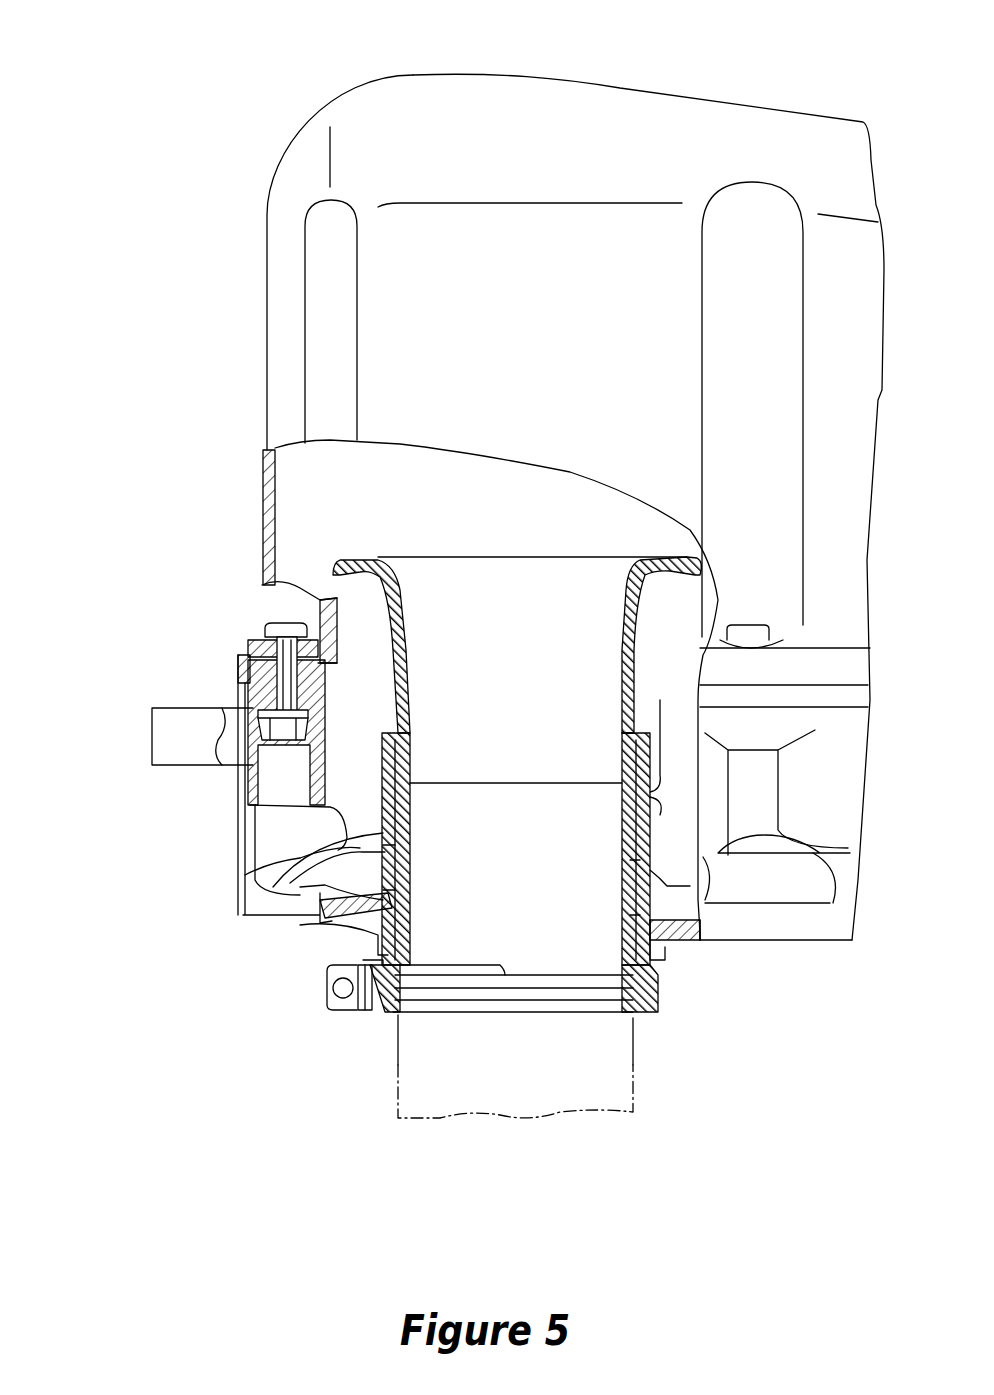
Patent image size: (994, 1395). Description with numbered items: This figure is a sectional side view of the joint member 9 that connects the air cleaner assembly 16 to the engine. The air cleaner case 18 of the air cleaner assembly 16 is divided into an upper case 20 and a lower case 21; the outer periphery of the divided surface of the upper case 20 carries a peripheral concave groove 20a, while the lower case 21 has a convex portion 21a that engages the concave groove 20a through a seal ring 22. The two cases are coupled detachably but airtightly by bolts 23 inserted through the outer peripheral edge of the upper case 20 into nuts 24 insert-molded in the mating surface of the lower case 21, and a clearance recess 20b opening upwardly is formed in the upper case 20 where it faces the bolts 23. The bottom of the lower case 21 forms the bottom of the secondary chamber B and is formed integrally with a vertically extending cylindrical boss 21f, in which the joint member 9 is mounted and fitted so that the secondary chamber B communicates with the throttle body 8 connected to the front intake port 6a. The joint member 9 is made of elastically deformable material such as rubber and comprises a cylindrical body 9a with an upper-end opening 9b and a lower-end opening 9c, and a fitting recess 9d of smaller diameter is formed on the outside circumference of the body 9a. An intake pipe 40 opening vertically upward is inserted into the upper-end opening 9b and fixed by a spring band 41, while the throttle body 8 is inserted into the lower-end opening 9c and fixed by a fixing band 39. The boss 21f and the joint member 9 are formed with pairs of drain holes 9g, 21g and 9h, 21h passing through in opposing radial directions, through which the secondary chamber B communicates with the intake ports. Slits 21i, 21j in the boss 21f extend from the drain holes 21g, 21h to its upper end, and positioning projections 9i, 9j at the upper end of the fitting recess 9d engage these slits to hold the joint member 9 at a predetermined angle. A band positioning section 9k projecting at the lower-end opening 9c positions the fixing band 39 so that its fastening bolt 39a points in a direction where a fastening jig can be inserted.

The air cleaner assembly 16 is at (268, 98).
The air cleaner case 18 is at (768, 100).
The upper case 20 is at (260, 283).
The concave groove 20a is at (242, 713).
The clearance recess 20b is at (350, 255).
The secondary chamber B is at (305, 478).
The lower case 21 is at (236, 886).
The convex portion 21a is at (240, 672).
The cylindrical boss 21f is at (300, 870).
The drain hole 21g is at (350, 890).
The drain hole 21h is at (677, 935).
The slit 21i is at (340, 860).
The slit 21j is at (640, 880).
The seal ring 22 is at (252, 648).
The bolt 23 is at (283, 623).
The nut 24 is at (250, 718).
The intake pipe 40 is at (637, 617).
The spring band 41 is at (660, 727).
The joint member 9 is at (663, 998).
The cylindrical body 9a is at (410, 803).
The upper-end opening 9b is at (620, 748).
The lower-end opening 9c is at (625, 1017).
The fitting recess 9d is at (630, 866).
The drain hole 9g is at (383, 890).
The drain hole 9h is at (630, 913).
The positioning projection 9i is at (383, 843).
The positioning projection 9j is at (666, 827).
The band positioning section 9k is at (370, 1007).
The fixing band 39 is at (341, 1013).
The fastening bolt 39a is at (340, 1000).
The throttle body 8 is at (633, 1067).
The front intake port 6a is at (535, 1168).